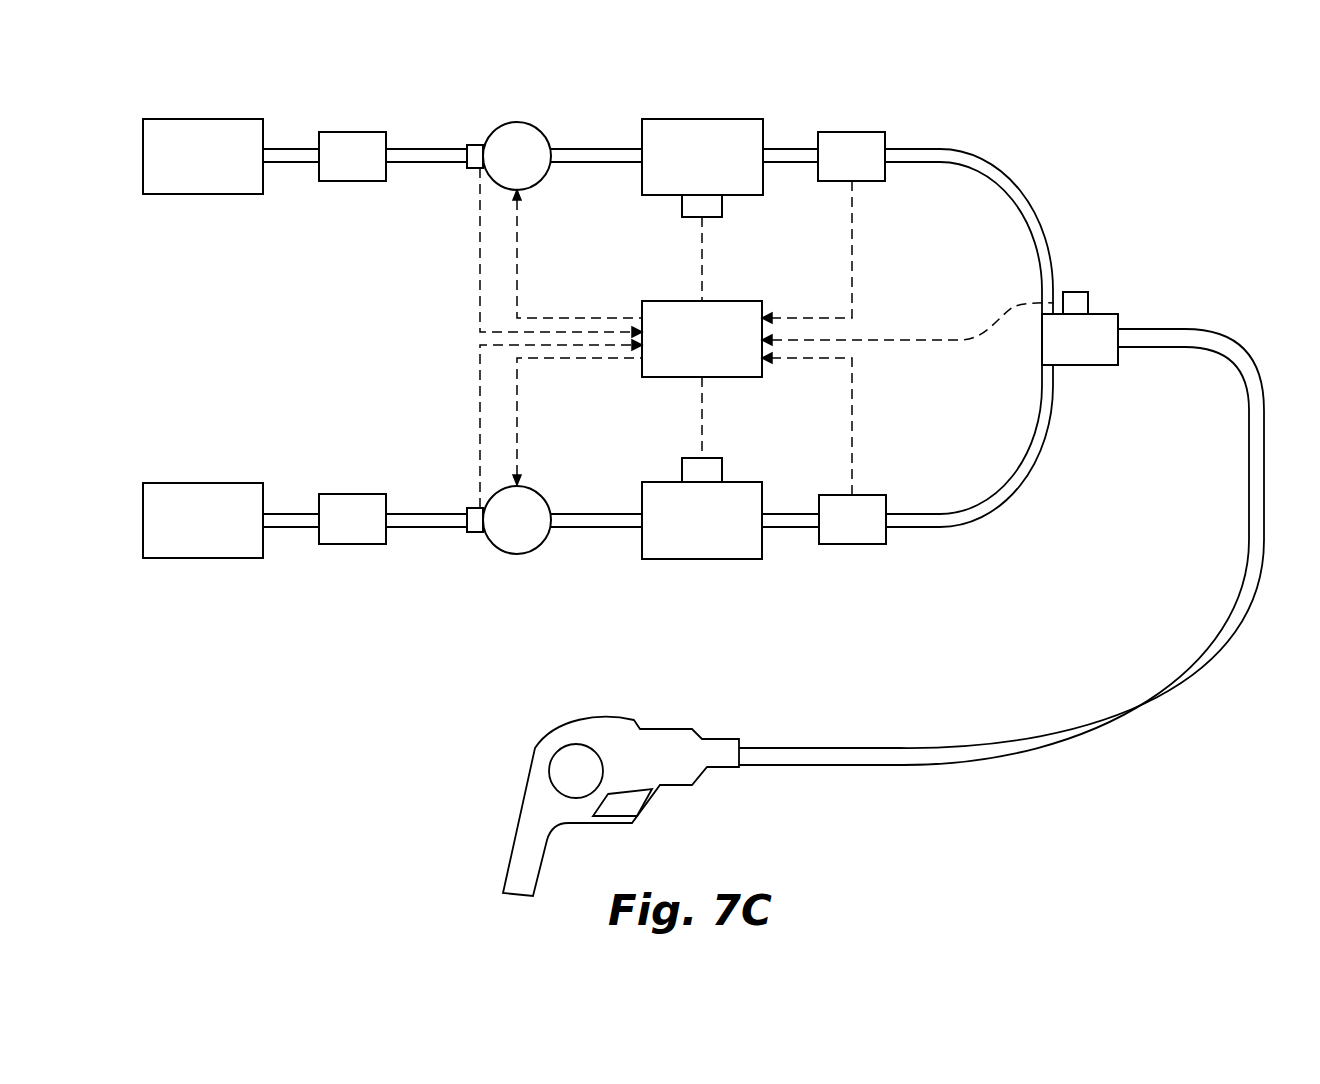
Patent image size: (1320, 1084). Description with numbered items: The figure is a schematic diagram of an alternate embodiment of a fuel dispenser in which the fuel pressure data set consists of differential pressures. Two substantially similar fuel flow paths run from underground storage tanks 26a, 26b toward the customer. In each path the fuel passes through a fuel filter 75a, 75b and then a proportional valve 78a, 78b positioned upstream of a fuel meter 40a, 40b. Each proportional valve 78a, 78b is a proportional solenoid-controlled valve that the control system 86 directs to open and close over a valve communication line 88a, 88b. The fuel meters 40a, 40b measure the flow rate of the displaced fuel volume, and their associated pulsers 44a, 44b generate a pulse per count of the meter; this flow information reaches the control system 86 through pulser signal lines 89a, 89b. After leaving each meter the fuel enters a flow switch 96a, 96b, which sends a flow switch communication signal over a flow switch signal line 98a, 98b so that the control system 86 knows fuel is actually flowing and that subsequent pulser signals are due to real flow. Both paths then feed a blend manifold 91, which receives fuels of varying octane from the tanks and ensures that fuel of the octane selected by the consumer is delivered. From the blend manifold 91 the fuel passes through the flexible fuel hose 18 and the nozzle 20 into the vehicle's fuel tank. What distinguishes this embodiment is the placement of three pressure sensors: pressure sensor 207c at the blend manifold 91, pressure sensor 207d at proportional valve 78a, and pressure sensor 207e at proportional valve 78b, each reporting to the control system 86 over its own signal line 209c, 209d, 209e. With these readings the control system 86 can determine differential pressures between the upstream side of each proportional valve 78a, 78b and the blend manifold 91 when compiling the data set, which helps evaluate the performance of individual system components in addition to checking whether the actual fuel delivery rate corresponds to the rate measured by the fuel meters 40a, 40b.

The underground storage tank 26a is at (185, 168).
The underground storage tank 26b is at (185, 532).
The fuel filter 75a is at (334, 168).
The fuel filter 75b is at (334, 531).
The proportional valve 78a is at (499, 168).
The proportional valve 78b is at (499, 532).
The fuel meter 40a is at (684, 168).
The fuel meter 40b is at (684, 532).
The pulser 44a is at (722, 204).
The pulser 44b is at (722, 468).
The flow switch 96a is at (834, 168).
The flow switch 96b is at (834, 531).
The control system 86 is at (690, 350).
The blend manifold 91 is at (1068, 351).
The pressure sensor 207d is at (478, 145).
The pressure sensor 207e is at (478, 532).
The pressure sensor 207c is at (1088, 301).
The signal line 209d is at (480, 268).
The signal line 209e is at (480, 432).
The signal line 209c is at (931, 338).
The valve communication line 88a is at (517, 271).
The valve communication line 88b is at (517, 443).
The pulser signal line 89a is at (702, 271).
The pulser signal line 89b is at (702, 424).
The flow switch signal line 98a is at (852, 234).
The flow switch signal line 98b is at (852, 437).
The fuel hose 18 is at (1175, 701).
The fuel nozzle 20 is at (650, 728).